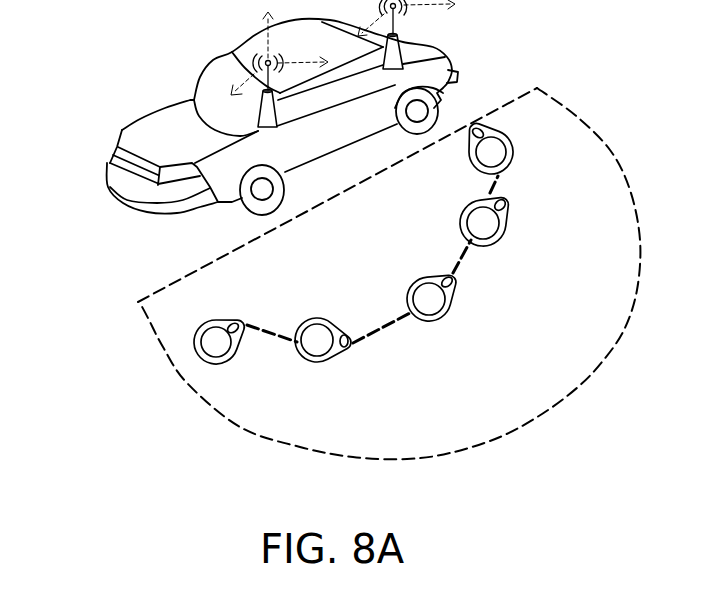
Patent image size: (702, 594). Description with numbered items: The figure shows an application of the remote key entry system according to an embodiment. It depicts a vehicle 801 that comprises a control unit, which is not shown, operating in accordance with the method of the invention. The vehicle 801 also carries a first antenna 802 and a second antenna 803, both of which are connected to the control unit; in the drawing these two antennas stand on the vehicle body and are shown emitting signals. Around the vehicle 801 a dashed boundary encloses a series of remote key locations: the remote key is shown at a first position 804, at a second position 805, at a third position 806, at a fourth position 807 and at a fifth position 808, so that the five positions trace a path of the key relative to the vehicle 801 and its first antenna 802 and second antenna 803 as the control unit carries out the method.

The vehicle 801 is at (110, 130).
The first antenna 802 is at (254, 110).
The second antenna 803 is at (409, 44).
The first position 804 is at (187, 341).
The second position 805 is at (325, 366).
The third position 806 is at (456, 312).
The fourth position 807 is at (513, 230).
The fifth position 808 is at (516, 139).